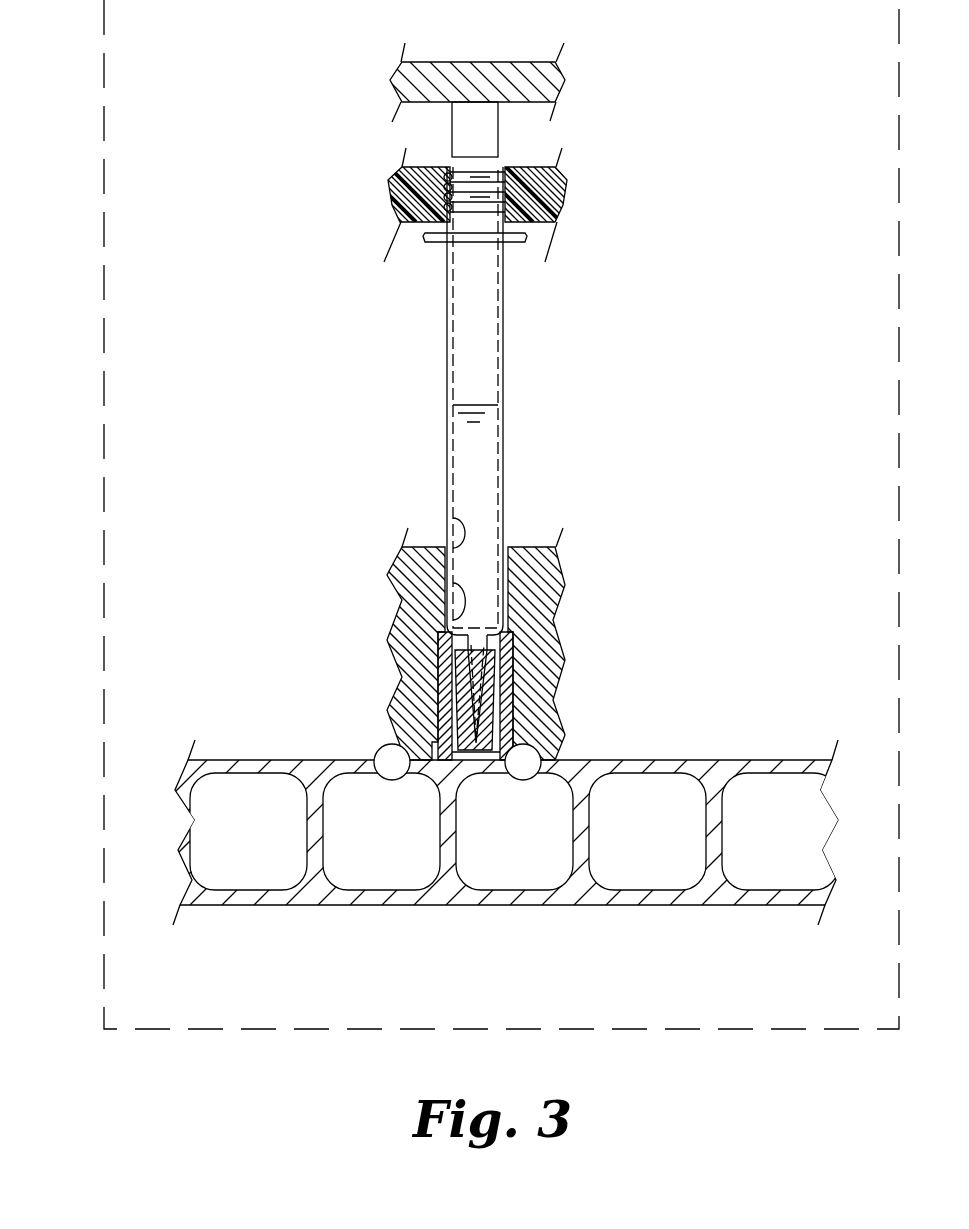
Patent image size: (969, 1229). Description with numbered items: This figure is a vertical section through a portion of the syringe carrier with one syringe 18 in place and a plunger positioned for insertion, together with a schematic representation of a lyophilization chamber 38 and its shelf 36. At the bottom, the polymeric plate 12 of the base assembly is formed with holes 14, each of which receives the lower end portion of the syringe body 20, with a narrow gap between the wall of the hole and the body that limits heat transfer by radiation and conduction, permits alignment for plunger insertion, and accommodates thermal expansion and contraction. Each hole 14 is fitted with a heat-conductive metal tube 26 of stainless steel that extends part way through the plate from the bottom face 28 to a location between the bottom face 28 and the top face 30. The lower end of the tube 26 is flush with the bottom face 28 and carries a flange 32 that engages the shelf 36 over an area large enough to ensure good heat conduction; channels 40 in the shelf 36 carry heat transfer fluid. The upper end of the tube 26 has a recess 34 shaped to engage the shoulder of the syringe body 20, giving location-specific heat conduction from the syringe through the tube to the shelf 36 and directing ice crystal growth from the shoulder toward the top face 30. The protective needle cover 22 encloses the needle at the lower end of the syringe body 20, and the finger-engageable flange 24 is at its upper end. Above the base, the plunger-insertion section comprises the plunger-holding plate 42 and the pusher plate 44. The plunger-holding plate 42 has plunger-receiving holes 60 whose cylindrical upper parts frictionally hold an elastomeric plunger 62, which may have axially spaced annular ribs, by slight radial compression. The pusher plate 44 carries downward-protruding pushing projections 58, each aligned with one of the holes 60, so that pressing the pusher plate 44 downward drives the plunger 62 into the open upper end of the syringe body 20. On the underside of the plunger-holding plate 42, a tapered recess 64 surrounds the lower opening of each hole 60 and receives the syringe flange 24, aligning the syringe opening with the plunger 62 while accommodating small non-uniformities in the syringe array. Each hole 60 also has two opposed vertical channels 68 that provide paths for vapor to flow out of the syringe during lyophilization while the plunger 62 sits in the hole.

The polymeric plate 12 is at (553, 600).
The holes 14 is at (457, 540).
The syringe 18 is at (476, 455).
The syringe body 20 is at (505, 437).
The protective needle cover 22 is at (460, 742).
The finger-engageable flange 24 is at (518, 243).
The heat-conductive metal tube 26 is at (508, 697).
The bottom face 28 is at (378, 748).
The top face 30 is at (530, 547).
The flange 32 is at (540, 746).
The recess 34 is at (420, 563).
The shelf 36 is at (499, 838).
The lyophilization chamber 38 is at (104, 367).
The channels 40 is at (257, 850).
The plunger-holding plate 42 is at (540, 184).
The pusher plate 44 is at (540, 81).
The pushing projections 58 is at (473, 120).
The plunger-receiving holes 60 is at (455, 198).
The plunger 62 is at (483, 203).
The recess 64 is at (430, 243).
The vertical channels 68 is at (447, 165).